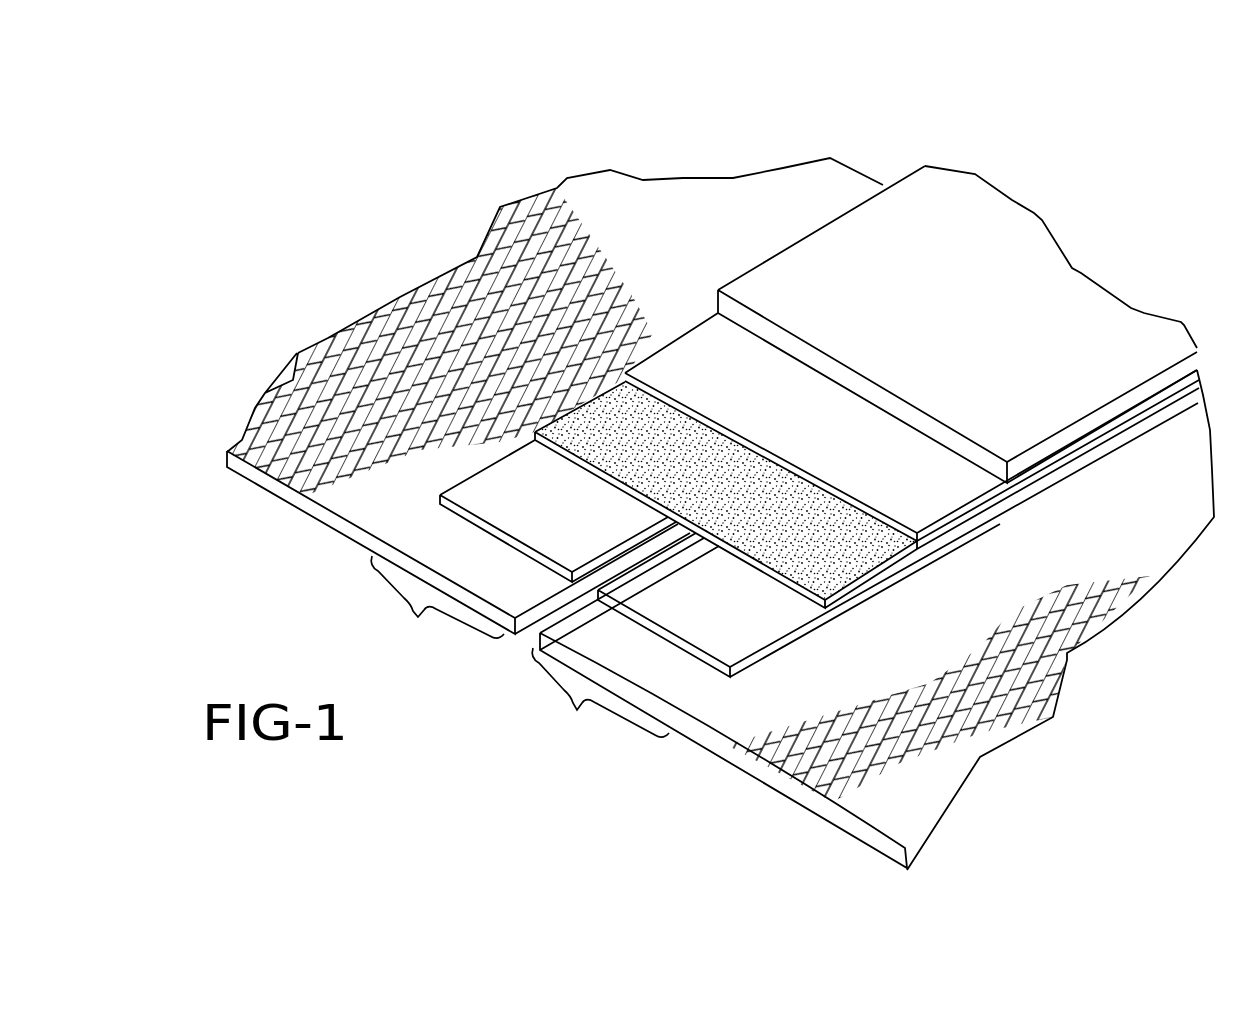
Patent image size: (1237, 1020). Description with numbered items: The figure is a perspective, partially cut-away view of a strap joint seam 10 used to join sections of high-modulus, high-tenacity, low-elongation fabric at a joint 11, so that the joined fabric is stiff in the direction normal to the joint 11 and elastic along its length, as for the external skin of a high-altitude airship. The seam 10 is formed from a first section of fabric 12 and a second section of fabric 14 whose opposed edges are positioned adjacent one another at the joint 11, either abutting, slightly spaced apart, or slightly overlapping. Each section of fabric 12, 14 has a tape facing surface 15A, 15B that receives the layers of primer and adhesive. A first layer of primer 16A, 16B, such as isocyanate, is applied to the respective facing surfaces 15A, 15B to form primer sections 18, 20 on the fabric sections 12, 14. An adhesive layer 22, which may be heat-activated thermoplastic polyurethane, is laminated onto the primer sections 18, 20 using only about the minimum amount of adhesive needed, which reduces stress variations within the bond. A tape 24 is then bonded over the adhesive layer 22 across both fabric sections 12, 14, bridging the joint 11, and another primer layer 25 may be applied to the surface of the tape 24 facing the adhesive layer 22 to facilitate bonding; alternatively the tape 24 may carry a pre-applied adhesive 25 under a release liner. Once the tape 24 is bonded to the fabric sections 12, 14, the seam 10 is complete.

The strap joint seam 10 is at (348, 216).
The joint 11 is at (515, 653).
The first section of fabric 12 is at (1093, 603).
The second section of fabric 14 is at (533, 233).
The tape facing surface 15A is at (608, 673).
The tape facing surface 15B is at (450, 582).
The first layer of primer 16A is at (678, 614).
The first layer of primer 16B is at (520, 518).
The primer section 18 is at (600, 695).
The primer section 20 is at (437, 602).
The adhesive layer 22 is at (790, 523).
The tape 24 is at (932, 326).
The primer layer 25 is at (722, 394).